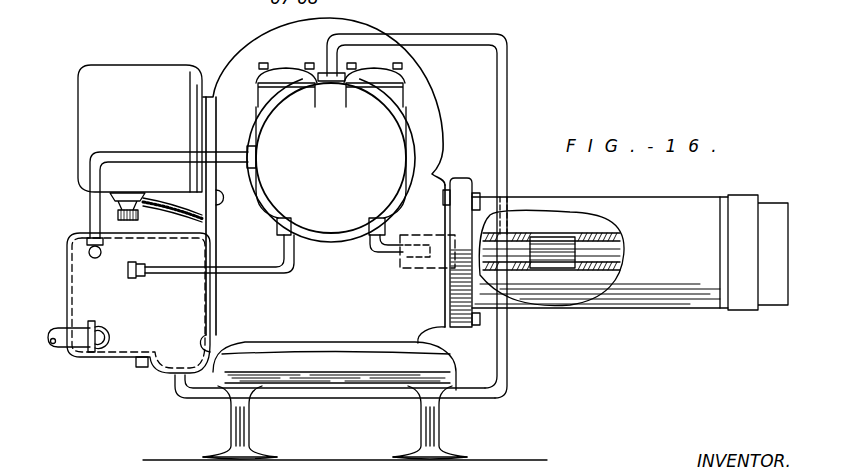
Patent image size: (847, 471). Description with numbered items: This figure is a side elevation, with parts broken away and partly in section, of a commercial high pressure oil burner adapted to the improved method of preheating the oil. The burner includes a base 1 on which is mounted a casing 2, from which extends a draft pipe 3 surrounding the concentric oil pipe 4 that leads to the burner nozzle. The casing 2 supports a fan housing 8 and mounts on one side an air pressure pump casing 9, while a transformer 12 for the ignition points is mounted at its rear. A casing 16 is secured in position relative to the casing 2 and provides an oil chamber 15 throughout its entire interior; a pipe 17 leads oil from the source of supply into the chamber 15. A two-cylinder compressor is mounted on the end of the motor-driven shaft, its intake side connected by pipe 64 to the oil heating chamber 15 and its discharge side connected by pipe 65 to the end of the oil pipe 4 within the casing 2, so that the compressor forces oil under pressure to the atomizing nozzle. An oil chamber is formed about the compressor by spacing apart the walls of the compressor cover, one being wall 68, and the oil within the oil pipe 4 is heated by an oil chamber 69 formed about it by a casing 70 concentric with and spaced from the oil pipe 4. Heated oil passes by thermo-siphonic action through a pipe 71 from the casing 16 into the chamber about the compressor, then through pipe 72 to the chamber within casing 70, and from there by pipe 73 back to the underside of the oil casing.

The base 1 is at (322, 370).
The casing 2 is at (373, 333).
The draft pipe 3 is at (657, 300).
The oil pipe 4 is at (600, 233).
The fan housing 8 is at (438, 160).
The air pressure pump casing 9 is at (420, 173).
The transformer 12 is at (140, 143).
The oil chamber 15 is at (73, 291).
The casing 16 is at (66, 264).
The pipe 17 is at (62, 345).
The pipe 64 is at (271, 278).
The pipe 65 is at (373, 256).
The wall of compressor cover 68 is at (395, 145).
The oil chamber 69 is at (548, 240).
The casing 70 is at (518, 237).
The pipe 71 is at (131, 157).
The pipe 72 is at (508, 86).
The pipe 73 is at (488, 402).